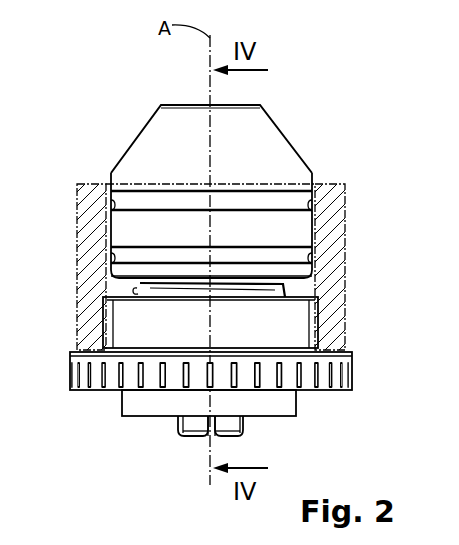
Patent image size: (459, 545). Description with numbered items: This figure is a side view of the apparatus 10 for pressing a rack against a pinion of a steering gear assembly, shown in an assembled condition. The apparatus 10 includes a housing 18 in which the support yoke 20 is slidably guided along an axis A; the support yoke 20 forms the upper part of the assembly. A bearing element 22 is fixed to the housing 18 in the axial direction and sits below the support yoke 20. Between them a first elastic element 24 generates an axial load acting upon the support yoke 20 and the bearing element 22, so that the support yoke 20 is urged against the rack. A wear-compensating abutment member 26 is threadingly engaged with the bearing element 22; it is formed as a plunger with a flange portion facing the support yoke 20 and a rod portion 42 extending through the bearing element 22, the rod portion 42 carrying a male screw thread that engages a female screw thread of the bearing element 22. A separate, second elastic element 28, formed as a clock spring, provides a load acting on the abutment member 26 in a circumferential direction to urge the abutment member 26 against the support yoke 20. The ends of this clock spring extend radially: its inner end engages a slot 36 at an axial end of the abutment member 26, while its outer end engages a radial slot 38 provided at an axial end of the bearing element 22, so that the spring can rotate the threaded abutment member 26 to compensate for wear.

The apparatus 10 is at (291, 114).
The support yoke 20 is at (147, 143).
The housing 18 is at (86, 210).
The first elastic element 24 is at (132, 291).
The bearing element 22 is at (132, 326).
The second elastic element 28 is at (288, 403).
The radial slot 38 is at (162, 379).
The slot 36 is at (210, 422).
The wear-compensating abutment member 26 is at (235, 423).
The rod portion 42 is at (235, 423).